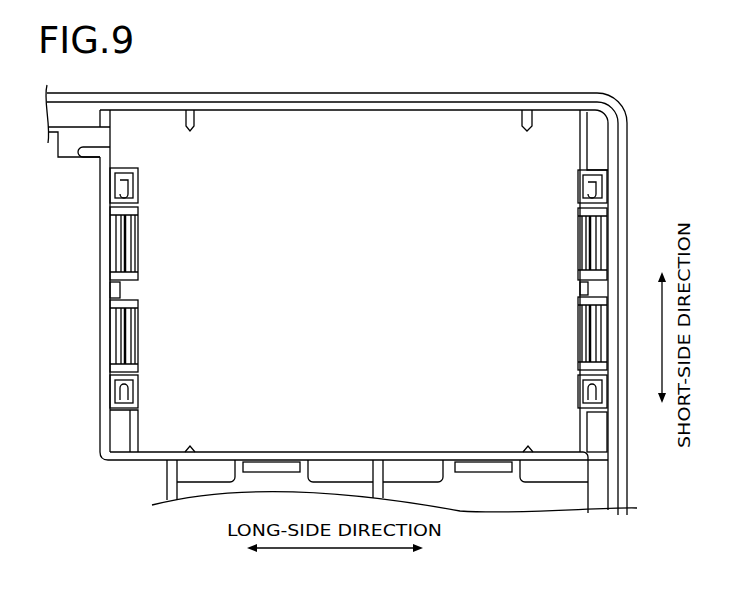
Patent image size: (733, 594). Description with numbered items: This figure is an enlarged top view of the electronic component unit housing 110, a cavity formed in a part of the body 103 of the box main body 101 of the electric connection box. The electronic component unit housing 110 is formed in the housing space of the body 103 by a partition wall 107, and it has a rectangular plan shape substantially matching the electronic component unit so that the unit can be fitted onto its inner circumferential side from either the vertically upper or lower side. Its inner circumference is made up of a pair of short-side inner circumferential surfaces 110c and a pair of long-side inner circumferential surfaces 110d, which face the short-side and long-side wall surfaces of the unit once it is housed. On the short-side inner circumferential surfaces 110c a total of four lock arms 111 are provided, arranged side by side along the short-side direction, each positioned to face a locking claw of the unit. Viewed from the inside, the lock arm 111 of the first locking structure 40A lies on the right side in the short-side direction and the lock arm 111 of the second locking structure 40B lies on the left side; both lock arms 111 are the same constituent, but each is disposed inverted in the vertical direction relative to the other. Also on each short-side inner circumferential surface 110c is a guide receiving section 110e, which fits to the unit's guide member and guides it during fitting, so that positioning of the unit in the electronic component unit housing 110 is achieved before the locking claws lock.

The body 103 is at (336, 272).
The box main body 101 is at (369, 90).
The electronic component unit housing 110 is at (494, 127).
The long-side inner circumferential surface 110d is at (332, 113).
The guide receiving section 110e is at (138, 200).
The short-side inner circumferential surface 110c is at (130, 288).
The lock arm 111 is at (358, 289).
The first locking structure 40A is at (358, 288).
The second locking structure 40B is at (140, 242).
The partition wall 107 is at (123, 458).